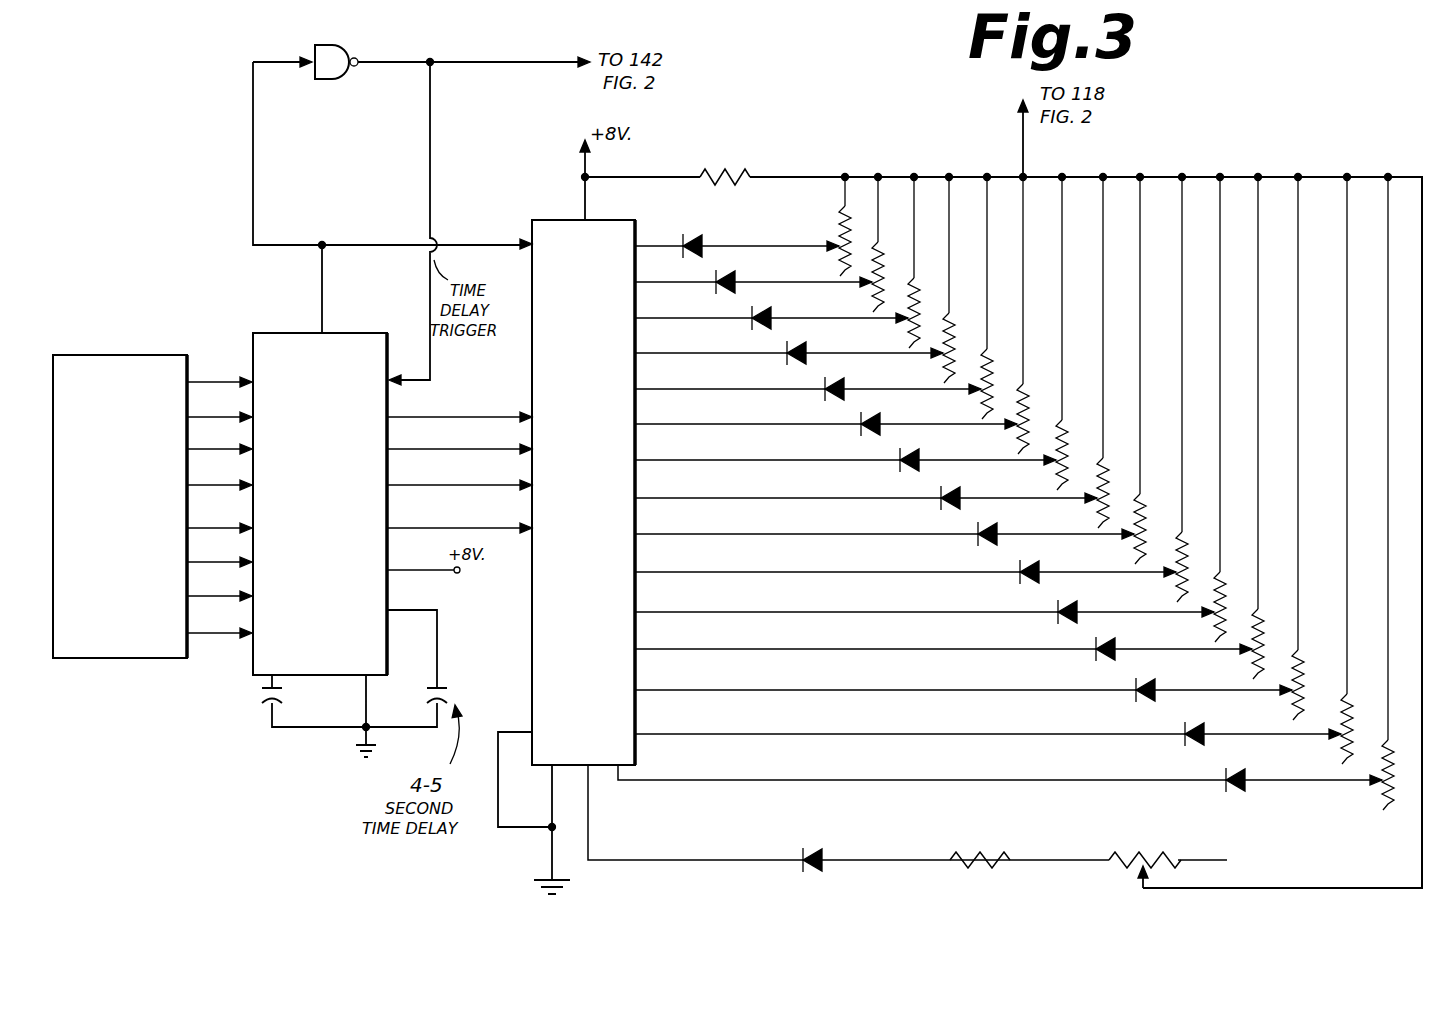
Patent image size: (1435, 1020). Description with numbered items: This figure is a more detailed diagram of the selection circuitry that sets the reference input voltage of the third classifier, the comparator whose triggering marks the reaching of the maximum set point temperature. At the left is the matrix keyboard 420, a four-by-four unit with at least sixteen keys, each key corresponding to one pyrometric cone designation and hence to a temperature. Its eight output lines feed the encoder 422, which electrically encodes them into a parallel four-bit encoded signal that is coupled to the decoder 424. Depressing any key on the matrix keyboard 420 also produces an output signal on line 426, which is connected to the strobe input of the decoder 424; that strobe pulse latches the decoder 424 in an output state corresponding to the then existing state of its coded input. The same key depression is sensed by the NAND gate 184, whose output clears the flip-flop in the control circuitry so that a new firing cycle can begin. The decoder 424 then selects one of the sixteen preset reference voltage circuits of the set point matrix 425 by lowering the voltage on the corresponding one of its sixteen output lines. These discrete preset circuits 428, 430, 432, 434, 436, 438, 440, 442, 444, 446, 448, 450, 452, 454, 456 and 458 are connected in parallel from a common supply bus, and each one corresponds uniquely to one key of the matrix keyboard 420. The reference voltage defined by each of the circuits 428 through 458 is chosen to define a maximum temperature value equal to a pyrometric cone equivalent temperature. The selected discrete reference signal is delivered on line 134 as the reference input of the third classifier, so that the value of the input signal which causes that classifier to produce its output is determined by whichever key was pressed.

The line 134 is at (1025, 154).
The NAND gate 184 is at (362, 36).
The matrix keyboard 420 is at (112, 358).
The encoder 422 is at (270, 334).
The decoder 424 is at (552, 222).
The set point matrix 425 is at (1297, 130).
The line 426 is at (322, 300).
The preset reference voltage circuit 428 is at (838, 234).
The preset reference voltage circuit 430 is at (868, 268).
The preset reference voltage circuit 432 is at (902, 304).
The preset reference voltage circuit 434 is at (938, 339).
The preset reference voltage circuit 436 is at (976, 375).
The preset reference voltage circuit 438 is at (1012, 410).
The preset reference voltage circuit 440 is at (1051, 446).
The preset reference voltage circuit 442 is at (1092, 484).
The preset reference voltage circuit 444 is at (1129, 520).
The preset reference voltage circuit 446 is at (1168, 558).
The preset reference voltage circuit 448 is at (1204, 598).
The preset reference voltage circuit 450 is at (1244, 635).
The preset reference voltage circuit 452 is at (1286, 676).
The preset reference voltage circuit 454 is at (1326, 720).
The preset reference voltage circuit 456 is at (1378, 766).
The preset reference voltage circuit 458 is at (1160, 840).